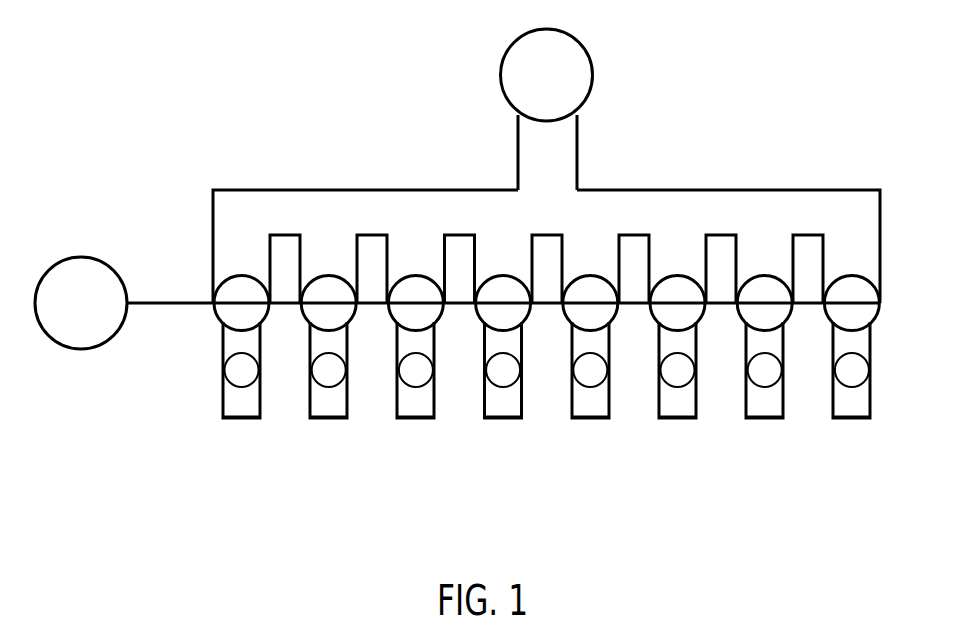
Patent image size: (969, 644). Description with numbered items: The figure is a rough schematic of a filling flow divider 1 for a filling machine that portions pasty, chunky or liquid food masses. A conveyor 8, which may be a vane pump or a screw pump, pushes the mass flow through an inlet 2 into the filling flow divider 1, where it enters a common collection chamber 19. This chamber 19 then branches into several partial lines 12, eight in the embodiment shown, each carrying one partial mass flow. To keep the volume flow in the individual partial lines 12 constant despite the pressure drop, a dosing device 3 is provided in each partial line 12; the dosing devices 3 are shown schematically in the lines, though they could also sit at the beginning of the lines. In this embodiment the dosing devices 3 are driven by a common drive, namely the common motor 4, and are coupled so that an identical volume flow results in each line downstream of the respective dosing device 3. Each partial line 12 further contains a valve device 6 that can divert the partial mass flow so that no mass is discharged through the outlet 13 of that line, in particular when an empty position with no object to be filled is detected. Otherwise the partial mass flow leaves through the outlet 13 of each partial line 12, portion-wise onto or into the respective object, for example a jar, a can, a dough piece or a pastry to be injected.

The filling flow divider 1 is at (826, 84).
The inlet 2 is at (578, 150).
The dosing devices 3 is at (240, 275).
The common motor 4 is at (80, 349).
The valve device 6 is at (547, 370).
The conveyor 8 is at (593, 60).
The partial lines 12 is at (261, 338).
The outlet 13 is at (242, 420).
The collection chamber 19 is at (213, 210).